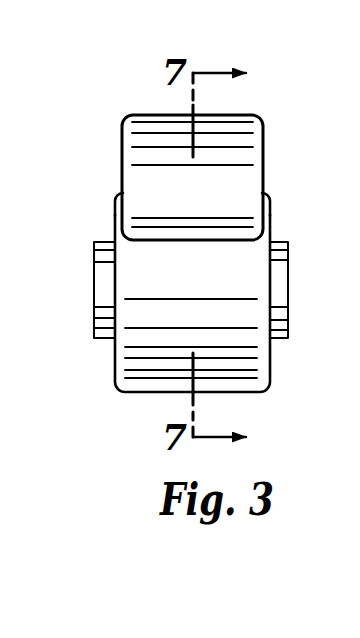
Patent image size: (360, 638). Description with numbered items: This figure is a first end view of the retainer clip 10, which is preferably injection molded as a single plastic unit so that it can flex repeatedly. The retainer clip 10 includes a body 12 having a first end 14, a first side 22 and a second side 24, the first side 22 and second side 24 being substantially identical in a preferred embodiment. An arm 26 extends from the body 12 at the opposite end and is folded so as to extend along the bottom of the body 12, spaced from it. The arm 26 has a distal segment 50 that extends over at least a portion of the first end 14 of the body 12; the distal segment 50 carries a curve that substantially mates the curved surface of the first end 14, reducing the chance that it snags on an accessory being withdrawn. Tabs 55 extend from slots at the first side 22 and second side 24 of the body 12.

The retainer clip 10 is at (113, 115).
The body 12 is at (111, 358).
The first end 14 is at (237, 255).
The first side 22 is at (113, 209).
The second side 24 is at (272, 212).
The arm 26 is at (268, 113).
The distal segment 50 is at (162, 213).
The tabs 55 is at (103, 340).